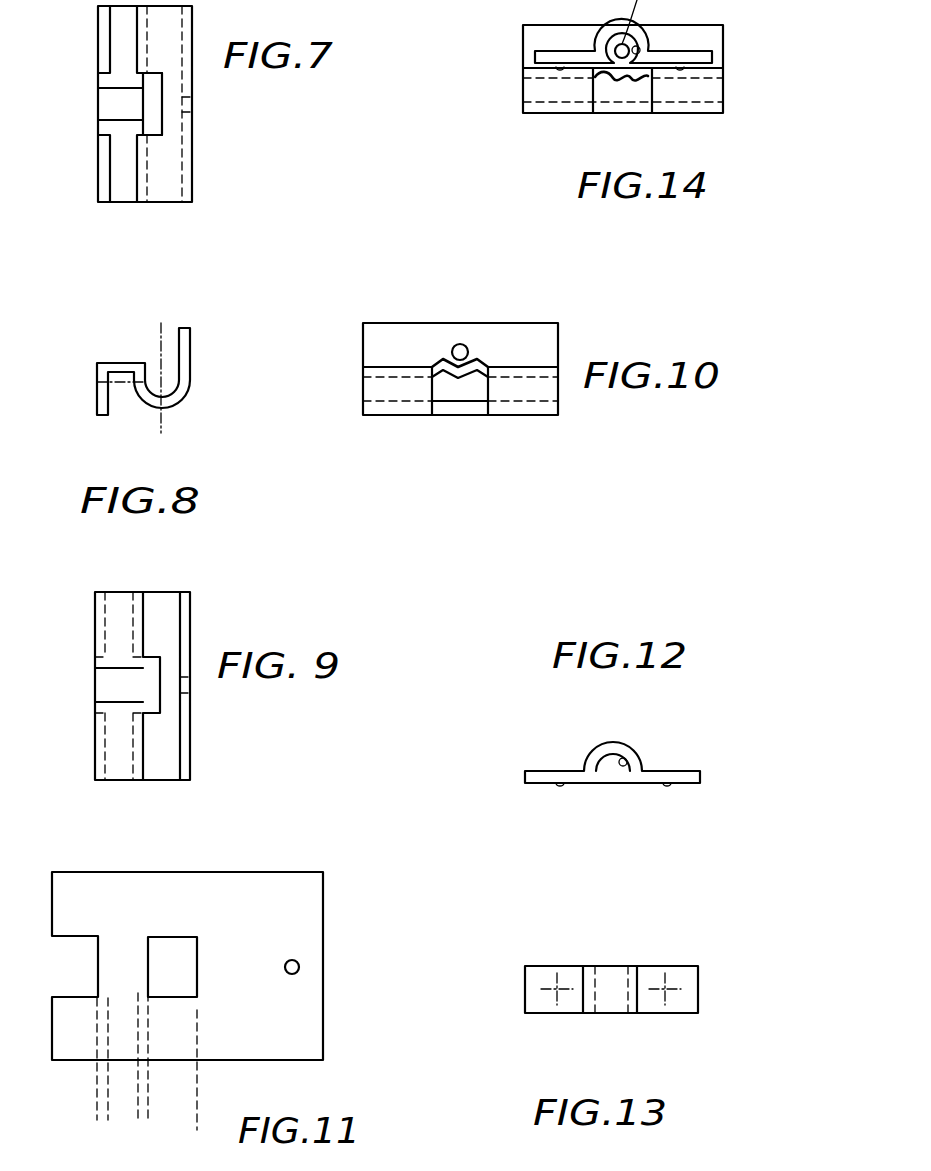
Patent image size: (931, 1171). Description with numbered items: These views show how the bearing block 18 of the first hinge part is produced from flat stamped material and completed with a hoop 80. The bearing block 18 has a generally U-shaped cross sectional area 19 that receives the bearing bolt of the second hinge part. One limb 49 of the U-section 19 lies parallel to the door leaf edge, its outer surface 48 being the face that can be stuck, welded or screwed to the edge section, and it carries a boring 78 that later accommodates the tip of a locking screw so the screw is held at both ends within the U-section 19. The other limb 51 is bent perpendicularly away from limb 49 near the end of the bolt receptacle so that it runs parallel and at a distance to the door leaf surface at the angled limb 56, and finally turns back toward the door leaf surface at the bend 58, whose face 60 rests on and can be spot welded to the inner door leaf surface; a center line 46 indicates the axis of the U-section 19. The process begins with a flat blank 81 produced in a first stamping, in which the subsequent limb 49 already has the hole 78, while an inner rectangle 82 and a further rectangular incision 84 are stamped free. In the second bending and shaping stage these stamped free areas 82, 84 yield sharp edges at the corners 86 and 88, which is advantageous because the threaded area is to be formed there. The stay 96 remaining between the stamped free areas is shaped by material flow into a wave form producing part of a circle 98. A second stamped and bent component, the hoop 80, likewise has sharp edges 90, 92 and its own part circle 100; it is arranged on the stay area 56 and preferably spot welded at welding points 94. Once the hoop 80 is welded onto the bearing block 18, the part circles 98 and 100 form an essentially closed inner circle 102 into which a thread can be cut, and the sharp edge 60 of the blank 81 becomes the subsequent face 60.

In FIG. 14, the bearing block 18 is at (695, 110).
In FIG. 8, the bearing block 18 is at (194, 341).
In FIG. 8, the U-shaped cross sectional area 19 is at (167, 382).
In FIG. 8, the center line 46 is at (158, 345).
In FIG. 8, the outer surface 48 is at (192, 366).
In FIG. 8, the limb 49 is at (187, 402).
In FIG. 11, the limb 49 is at (238, 892).
In FIG. 8, the limb 51 is at (148, 407).
In FIG. 11, the limb 51 is at (183, 890).
In FIG. 8, the angled limb 56 is at (122, 387).
In FIG. 9, the angled limb 56 is at (123, 607).
In FIG. 11, the angled limb 56 is at (127, 895).
In FIG. 8, the bend 58 is at (97, 403).
In FIG. 11, the bend 58 is at (62, 895).
In FIG. 7, the face 60 is at (103, 192).
In FIG. 8, the face 60 is at (107, 417).
In FIG. 11, the face 60 is at (50, 1040).
In FIG. 7, the boring 78 is at (187, 103).
In FIG. 10, the boring 78 is at (458, 343).
In FIG. 11, the boring 78 is at (299, 967).
In FIG. 14, the hoop 80 is at (705, 58).
In FIG. 12, the hoop 80 is at (700, 838).
In FIG. 13, the hoop 80 is at (585, 933).
In FIG. 11, the flat blank 81 is at (250, 1050).
In FIG. 11, the inner rectangle 82 is at (167, 987).
In FIG. 11, the rectangular incision 84 is at (83, 985).
In FIG. 7, the corner 86 is at (98, 125).
In FIG. 7, the corner 88 is at (155, 133).
In FIG. 13, the sharp edge 90 is at (632, 967).
In FIG. 13, the sharp edge 92 is at (633, 1015).
In FIG. 14, the welding points 94 is at (567, 72).
In FIG. 12, the welding points 94 is at (560, 787).
In FIG. 13, the welding points 94 is at (555, 993).
In FIG. 10, the stay 96 is at (483, 370).
In FIG. 11, the stay 96 is at (108, 955).
In FIG. 10, the part of a circle 98 is at (470, 360).
In FIG. 12, the part circle 100 is at (625, 760).
In FIG. 14, the inner circle 102 is at (647, 50).